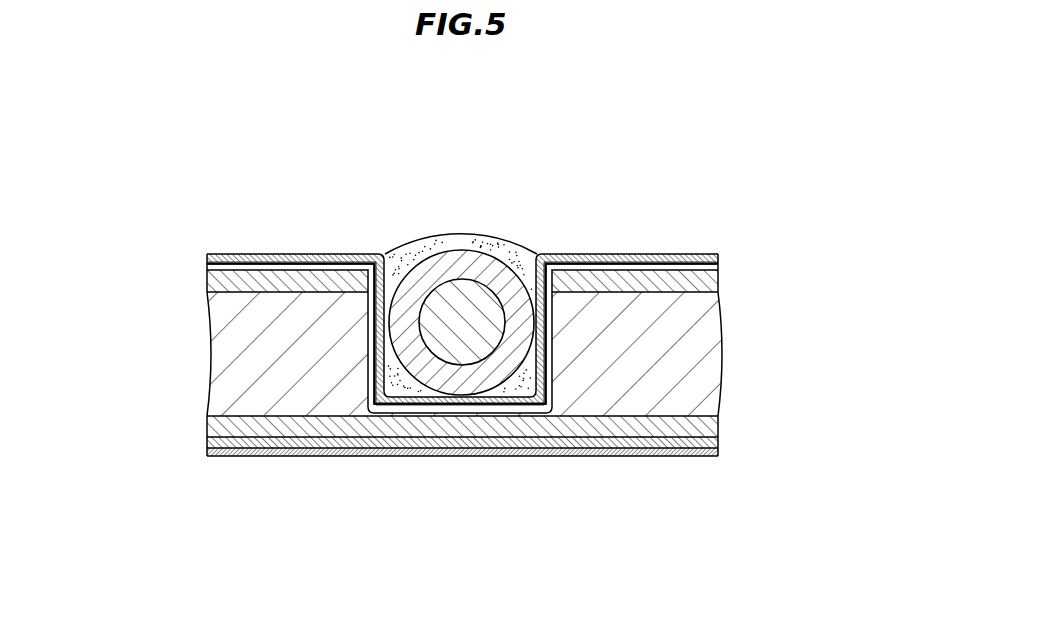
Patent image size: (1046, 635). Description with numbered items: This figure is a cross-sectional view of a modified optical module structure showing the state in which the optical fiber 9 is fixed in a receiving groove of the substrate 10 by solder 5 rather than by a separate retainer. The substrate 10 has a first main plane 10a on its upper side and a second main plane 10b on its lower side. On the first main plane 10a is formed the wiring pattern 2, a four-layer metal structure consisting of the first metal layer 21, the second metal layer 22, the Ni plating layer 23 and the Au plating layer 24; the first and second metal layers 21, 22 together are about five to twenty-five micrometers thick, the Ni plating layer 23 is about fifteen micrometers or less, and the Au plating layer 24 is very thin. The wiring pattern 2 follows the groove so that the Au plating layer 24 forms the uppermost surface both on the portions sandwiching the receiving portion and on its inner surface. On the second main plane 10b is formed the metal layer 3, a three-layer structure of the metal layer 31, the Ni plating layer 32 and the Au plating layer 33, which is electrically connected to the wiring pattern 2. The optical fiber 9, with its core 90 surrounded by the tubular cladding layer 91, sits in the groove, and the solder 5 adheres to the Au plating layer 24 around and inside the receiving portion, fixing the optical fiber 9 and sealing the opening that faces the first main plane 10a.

The wiring pattern 2 is at (512, 313).
The first metal layer 21 is at (714, 281).
The second metal layer 22 is at (714, 268).
The Ni plating layer 23 is at (716, 263).
The Au plating layer 24 is at (788, 310).
The metal layer 3 is at (416, 438).
The metal layer 31 is at (215, 428).
The Ni plating layer 32 is at (215, 442).
The Au plating layer 33 is at (215, 450).
The solder 5 is at (468, 240).
The optical fiber 9 is at (461, 401).
The core 90 is at (487, 340).
The cladding layer 91 is at (447, 382).
The substrate 10 is at (495, 357).
The first main plane 10a is at (257, 294).
The second main plane 10b is at (600, 416).